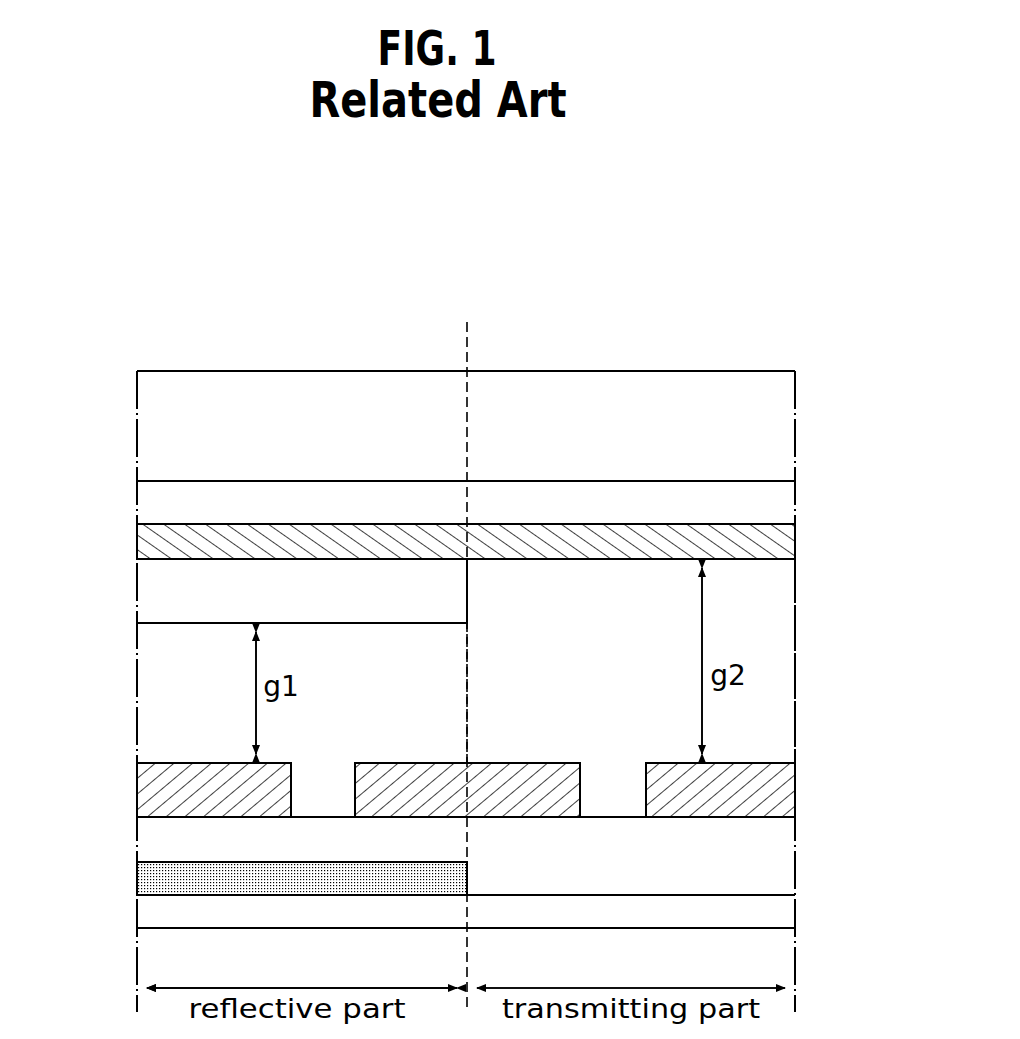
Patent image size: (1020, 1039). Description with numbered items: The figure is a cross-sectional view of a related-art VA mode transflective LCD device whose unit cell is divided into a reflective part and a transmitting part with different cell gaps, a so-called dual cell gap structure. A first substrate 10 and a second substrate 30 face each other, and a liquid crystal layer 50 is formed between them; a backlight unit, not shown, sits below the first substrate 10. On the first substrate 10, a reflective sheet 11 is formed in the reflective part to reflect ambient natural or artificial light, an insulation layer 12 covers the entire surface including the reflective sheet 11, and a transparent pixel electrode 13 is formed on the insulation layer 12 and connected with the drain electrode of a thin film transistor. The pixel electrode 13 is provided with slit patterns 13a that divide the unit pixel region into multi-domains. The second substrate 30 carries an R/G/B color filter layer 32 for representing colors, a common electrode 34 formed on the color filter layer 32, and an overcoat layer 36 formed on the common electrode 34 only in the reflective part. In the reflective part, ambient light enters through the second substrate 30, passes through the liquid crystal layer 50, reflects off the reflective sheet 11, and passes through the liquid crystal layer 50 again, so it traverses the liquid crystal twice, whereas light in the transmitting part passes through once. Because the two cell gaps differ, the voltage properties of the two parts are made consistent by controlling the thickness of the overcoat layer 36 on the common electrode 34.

The first substrate 10 is at (785, 912).
The reflective sheet 11 is at (152, 880).
The insulation layer 12 is at (785, 856).
The pixel electrode 13 is at (785, 791).
The slit patterns 13a is at (611, 776).
The second substrate 30 is at (785, 421).
The R/G/B color filter layer 32 is at (785, 503).
The common electrode 34 is at (785, 541).
The overcoat layer 36 is at (152, 588).
The liquid crystal layer 50 is at (787, 651).